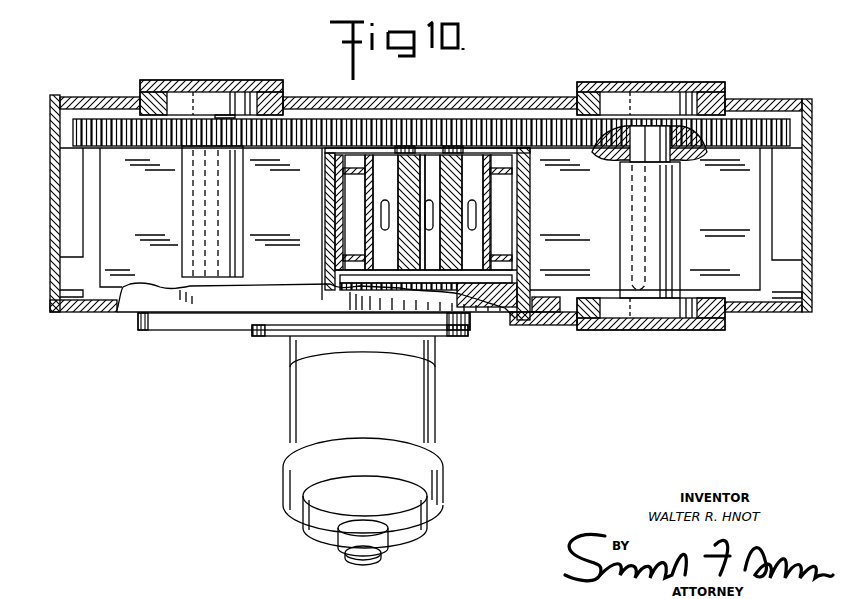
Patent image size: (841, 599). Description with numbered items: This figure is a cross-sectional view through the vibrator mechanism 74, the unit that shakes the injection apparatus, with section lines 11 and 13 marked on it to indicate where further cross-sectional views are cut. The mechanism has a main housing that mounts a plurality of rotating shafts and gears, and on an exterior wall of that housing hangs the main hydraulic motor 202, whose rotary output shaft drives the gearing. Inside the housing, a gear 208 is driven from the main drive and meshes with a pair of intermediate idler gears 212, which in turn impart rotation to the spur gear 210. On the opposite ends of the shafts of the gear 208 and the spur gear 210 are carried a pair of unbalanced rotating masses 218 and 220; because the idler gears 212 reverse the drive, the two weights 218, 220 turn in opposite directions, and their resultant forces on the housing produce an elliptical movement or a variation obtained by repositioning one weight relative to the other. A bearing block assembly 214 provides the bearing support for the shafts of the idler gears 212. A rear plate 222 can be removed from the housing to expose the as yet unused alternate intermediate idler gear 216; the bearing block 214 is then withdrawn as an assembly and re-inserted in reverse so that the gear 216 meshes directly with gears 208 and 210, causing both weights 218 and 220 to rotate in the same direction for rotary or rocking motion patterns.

The vibrator mechanism 74 is at (538, 78).
The main hydraulic motor 202 is at (300, 397).
The gear 208 is at (112, 127).
The spur gear 210 is at (742, 130).
The intermediate idler gears 212 is at (385, 127).
The bearing block assembly 214 is at (323, 158).
The alternate intermediate idler gear 216 is at (512, 310).
The unbalanced rotating mass 218 is at (147, 218).
The unbalanced rotating mass 220 is at (588, 222).
The rear plate 222 is at (542, 322).
The section line 11- 11 is at (36, 142).
The section line 13- 13 is at (36, 225).